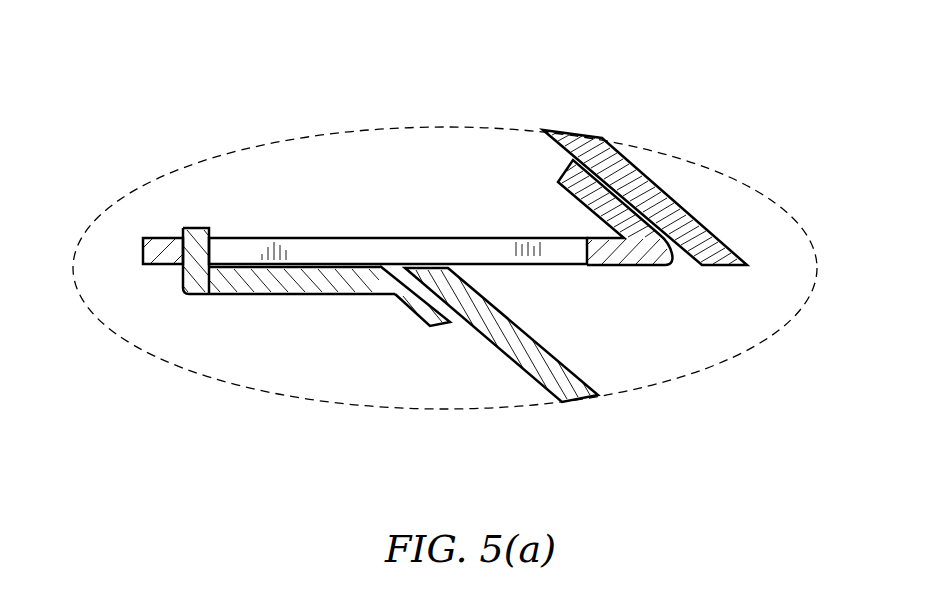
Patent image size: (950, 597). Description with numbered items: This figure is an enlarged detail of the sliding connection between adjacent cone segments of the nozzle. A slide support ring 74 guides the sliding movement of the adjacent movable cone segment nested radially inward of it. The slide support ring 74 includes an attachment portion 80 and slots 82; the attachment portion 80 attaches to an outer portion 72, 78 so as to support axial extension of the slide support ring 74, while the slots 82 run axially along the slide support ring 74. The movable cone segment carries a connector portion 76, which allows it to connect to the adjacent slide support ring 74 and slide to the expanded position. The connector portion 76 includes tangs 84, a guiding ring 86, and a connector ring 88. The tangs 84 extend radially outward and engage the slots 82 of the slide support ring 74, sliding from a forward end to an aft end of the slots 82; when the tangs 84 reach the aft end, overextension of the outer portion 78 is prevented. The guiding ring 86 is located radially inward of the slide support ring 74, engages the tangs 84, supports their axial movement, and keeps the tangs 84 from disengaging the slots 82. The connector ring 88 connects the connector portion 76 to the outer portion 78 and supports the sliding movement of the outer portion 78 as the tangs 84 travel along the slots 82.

The outer portion 72 is at (658, 182).
The slide support ring 74 is at (495, 77).
The connector portion 76 is at (377, 473).
The outer portion 78 is at (527, 324).
The attachment portion 80 is at (562, 209).
The slots 82 is at (355, 238).
The tangs 84 is at (174, 230).
The guiding ring 86 is at (312, 306).
The connector ring 88 is at (401, 318).